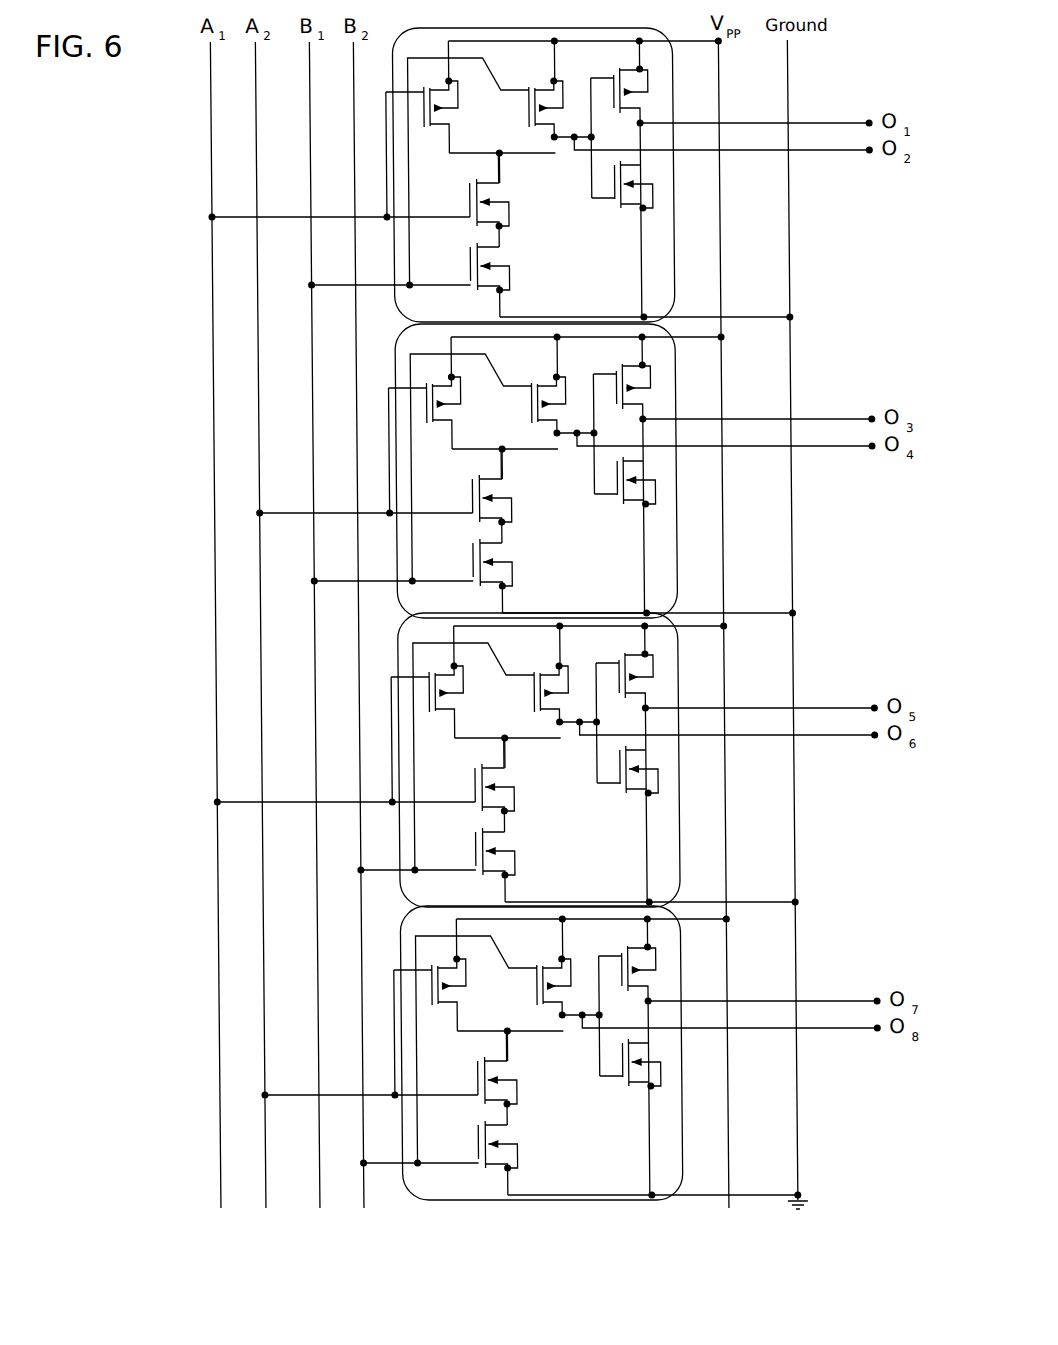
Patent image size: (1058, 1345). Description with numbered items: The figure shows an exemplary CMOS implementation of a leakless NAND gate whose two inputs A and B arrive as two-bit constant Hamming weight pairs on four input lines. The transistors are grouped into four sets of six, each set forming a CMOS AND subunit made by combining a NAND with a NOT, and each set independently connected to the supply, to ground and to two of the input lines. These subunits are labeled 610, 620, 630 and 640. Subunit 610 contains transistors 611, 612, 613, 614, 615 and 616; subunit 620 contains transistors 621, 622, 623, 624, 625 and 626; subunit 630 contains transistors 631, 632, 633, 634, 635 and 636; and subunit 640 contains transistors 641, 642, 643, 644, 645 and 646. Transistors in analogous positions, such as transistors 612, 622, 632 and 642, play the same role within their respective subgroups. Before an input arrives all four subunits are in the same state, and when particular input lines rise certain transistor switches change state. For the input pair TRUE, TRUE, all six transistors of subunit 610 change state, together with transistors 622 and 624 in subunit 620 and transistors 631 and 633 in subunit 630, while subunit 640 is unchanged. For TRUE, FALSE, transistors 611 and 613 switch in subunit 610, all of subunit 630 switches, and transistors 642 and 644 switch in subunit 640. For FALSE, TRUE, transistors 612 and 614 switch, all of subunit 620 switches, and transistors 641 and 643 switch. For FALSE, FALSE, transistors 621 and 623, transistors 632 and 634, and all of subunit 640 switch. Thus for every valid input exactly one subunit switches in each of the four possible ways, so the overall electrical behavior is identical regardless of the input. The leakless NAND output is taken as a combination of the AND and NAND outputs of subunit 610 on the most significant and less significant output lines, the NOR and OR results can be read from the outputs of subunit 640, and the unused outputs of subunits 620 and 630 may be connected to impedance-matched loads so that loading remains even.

The subunit 610 is at (673, 286).
The transistor 611 is at (418, 130).
The transistor 612 is at (527, 86).
The transistor 613 is at (490, 197).
The transistor 614 is at (490, 262).
The transistor 615 is at (613, 74).
The transistor 616 is at (615, 204).
The subunit 620 is at (556, 471).
The transistor 621 is at (441, 423).
The transistor 622 is at (487, 464).
The transistor 623 is at (512, 496).
The transistor 624 is at (513, 572).
The transistor 625 is at (613, 477).
The transistor 626 is at (616, 497).
The subunit 630 is at (559, 760).
The transistor 631 is at (444, 712).
The transistor 632 is at (489, 753).
The transistor 633 is at (515, 785).
The transistor 634 is at (515, 861).
The transistor 635 is at (616, 766).
The transistor 636 is at (619, 786).
The subunit 640 is at (561, 1053).
The transistor 641 is at (447, 1005).
The transistor 642 is at (492, 1046).
The transistor 643 is at (517, 1078).
The transistor 644 is at (518, 1154).
The transistor 645 is at (618, 1059).
The transistor 646 is at (621, 1079).